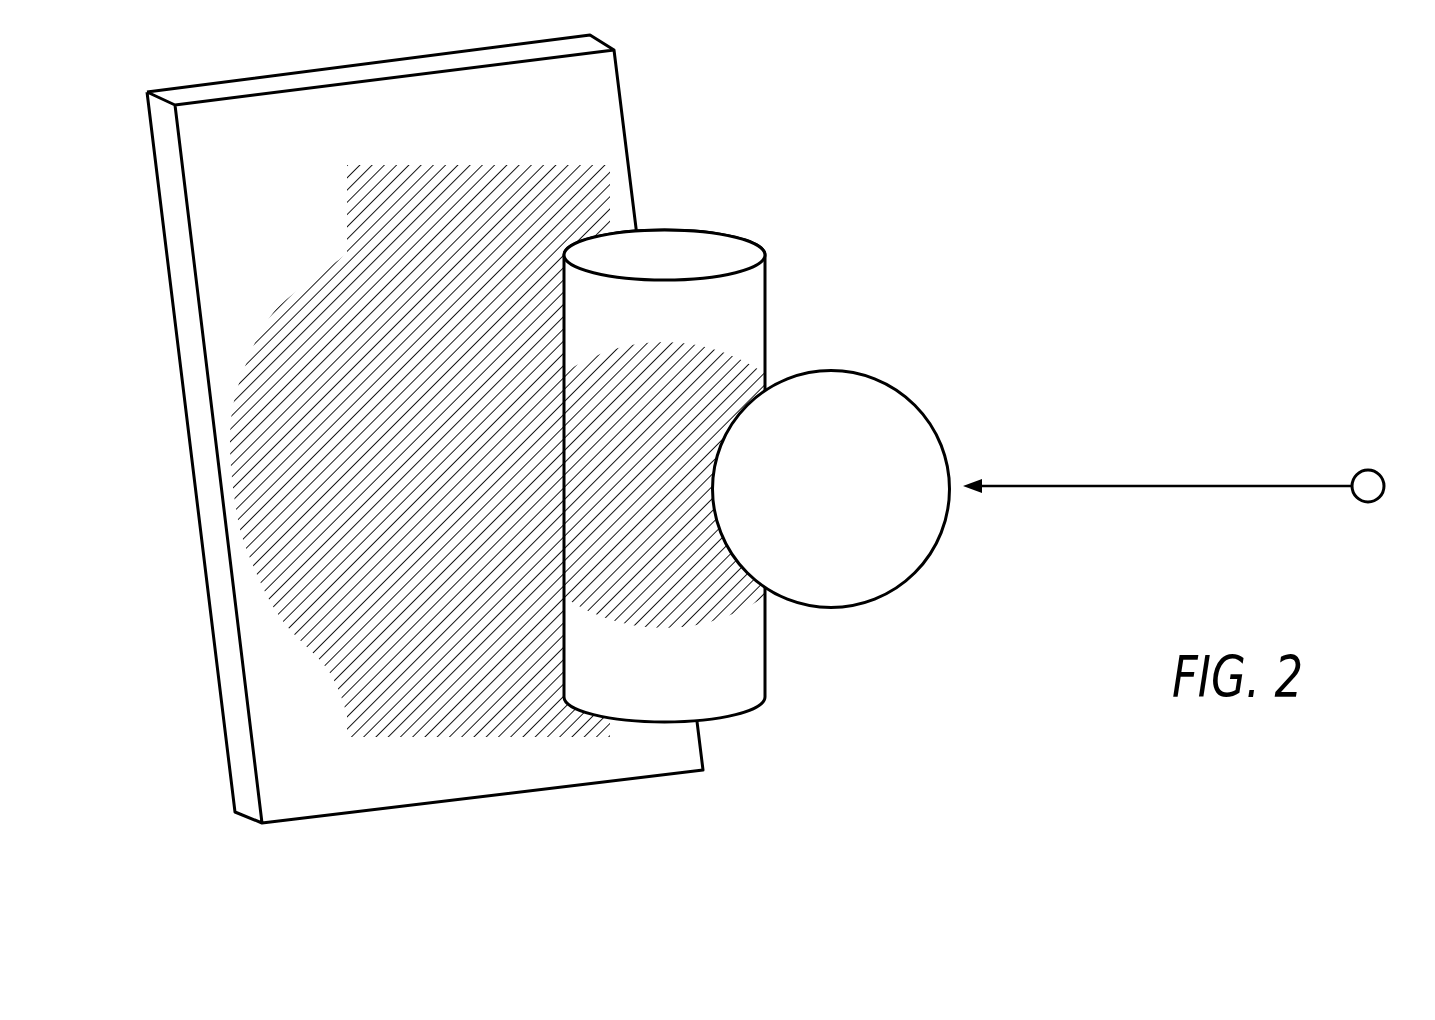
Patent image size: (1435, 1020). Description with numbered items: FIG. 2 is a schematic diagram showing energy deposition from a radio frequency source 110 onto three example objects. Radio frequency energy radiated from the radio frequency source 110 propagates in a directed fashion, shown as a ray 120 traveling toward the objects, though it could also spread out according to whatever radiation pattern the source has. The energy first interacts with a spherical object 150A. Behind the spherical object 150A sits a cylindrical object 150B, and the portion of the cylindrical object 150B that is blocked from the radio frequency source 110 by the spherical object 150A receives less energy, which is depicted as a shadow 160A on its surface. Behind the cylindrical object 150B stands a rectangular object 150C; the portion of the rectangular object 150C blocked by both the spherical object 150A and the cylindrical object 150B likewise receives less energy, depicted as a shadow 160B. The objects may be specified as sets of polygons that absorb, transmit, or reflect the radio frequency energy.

The radio frequency source 110 is at (1348, 455).
The ray 120 is at (1282, 487).
The spherical object 150A is at (862, 372).
The cylindrical object 150B is at (718, 232).
The rectangular object 150C is at (617, 73).
The shadow 160A is at (748, 627).
The shadow 160B is at (606, 157).